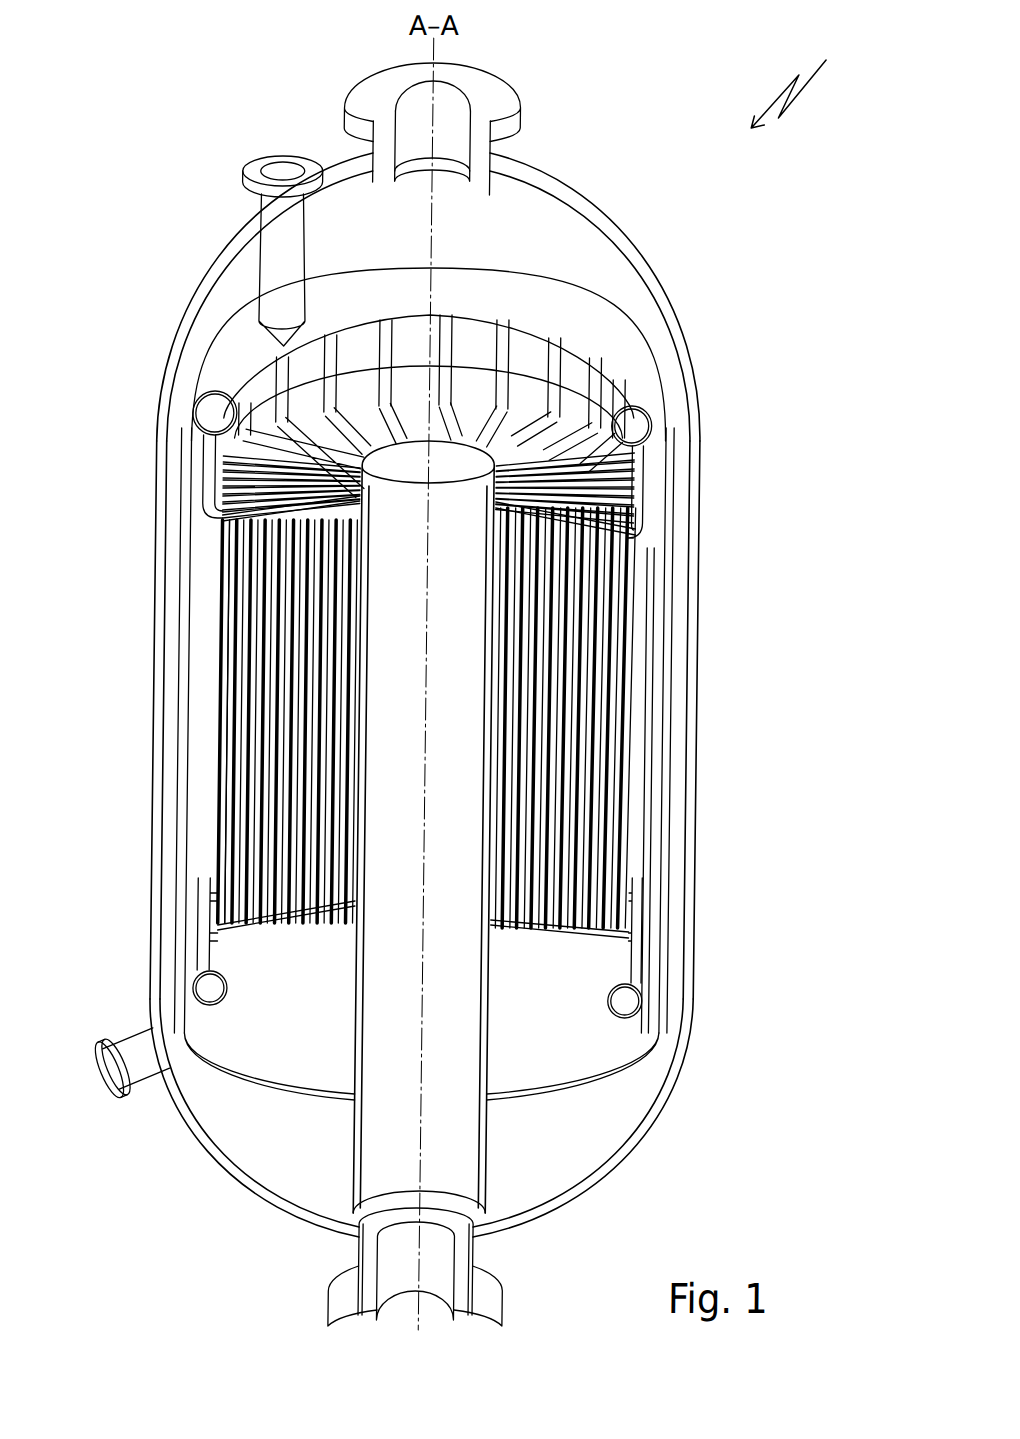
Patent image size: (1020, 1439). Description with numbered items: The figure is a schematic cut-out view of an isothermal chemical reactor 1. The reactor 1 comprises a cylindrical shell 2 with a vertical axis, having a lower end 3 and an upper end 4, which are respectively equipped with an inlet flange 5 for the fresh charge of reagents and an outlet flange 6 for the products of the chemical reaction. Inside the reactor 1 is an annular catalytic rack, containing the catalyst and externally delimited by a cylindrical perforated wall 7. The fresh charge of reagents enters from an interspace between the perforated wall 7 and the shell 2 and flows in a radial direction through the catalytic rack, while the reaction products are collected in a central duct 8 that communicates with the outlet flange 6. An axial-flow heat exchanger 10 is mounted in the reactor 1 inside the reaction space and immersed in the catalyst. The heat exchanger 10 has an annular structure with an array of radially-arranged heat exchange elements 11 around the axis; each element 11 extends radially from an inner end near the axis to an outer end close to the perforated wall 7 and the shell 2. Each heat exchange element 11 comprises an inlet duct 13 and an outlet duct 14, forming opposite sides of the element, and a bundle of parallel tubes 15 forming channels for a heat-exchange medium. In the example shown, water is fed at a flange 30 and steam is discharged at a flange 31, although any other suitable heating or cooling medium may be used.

The isothermal chemical reactor 1 is at (803, 81).
The cylindrical shell 2 is at (694, 760).
The lower end 3 is at (685, 1068).
The upper end 4 is at (633, 235).
The inlet flange 5 is at (521, 83).
The outlet flange 6 is at (506, 1280).
The cylindrical perforated wall 7 is at (196, 518).
The central duct 8 is at (372, 585).
The axial-flow heat exchanger 10 is at (208, 732).
The heat exchange elements 11 is at (249, 779).
The inlet duct 13 is at (282, 915).
The outlet duct 14 is at (228, 510).
The bundle of parallel tubes 15 is at (238, 618).
The flange 30 is at (118, 1062).
The flange 31 is at (257, 156).